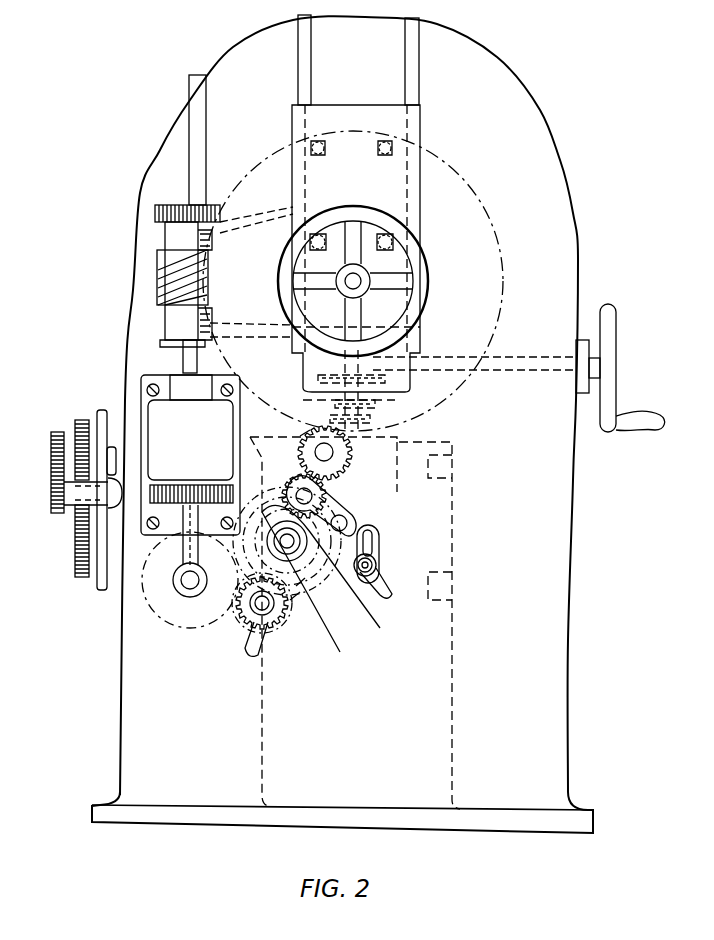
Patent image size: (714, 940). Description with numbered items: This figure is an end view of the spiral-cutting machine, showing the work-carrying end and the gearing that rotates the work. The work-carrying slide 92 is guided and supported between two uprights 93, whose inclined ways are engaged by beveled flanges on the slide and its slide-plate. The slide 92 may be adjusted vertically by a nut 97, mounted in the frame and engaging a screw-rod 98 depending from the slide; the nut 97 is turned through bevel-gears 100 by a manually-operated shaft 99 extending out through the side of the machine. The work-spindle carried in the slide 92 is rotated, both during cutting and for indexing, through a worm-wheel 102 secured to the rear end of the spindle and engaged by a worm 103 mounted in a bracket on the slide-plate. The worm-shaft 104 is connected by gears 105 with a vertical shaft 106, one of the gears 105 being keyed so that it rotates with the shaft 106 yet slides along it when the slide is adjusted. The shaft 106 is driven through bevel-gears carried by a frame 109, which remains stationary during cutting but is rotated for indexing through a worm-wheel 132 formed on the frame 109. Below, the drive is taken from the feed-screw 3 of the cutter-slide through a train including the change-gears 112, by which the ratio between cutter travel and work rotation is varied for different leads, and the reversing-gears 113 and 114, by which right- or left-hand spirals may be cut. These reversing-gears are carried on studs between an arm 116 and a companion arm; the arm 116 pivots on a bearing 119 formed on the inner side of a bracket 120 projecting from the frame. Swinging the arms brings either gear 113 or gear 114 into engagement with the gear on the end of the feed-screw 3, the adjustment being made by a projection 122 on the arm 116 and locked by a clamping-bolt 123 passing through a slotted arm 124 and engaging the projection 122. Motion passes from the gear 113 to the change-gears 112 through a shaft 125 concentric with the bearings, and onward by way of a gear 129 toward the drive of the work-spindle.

The uprights 93 is at (245, 52).
The work-carrying slide 92 is at (356, 115).
The worm-wheel 102 is at (263, 165).
The manually-operated shaft 99 is at (515, 365).
The bevel-gears 100 is at (390, 381).
The nut 97 is at (378, 404).
The screw-rod 98 is at (370, 420).
The vertical shaft 106 is at (197, 138).
The gears 105 is at (170, 204).
The worm 103 is at (158, 288).
The worm-shaft 104 is at (182, 346).
The frame 109 is at (190, 455).
The worm-wheel 132 is at (190, 478).
The gear 129 is at (180, 620).
The reversing-gear 113 is at (330, 496).
The feed-screw 3 is at (330, 428).
The reversing-gear 114 is at (342, 505).
The arm 116 is at (348, 522).
The shaft 125 is at (262, 512).
The bracket 120 is at (358, 613).
The bearing 119 is at (300, 594).
The slotted arm 124 is at (376, 545).
The clamping-bolt 123 is at (374, 560).
The projection 122 is at (380, 578).
The change-gears 112 is at (283, 620).